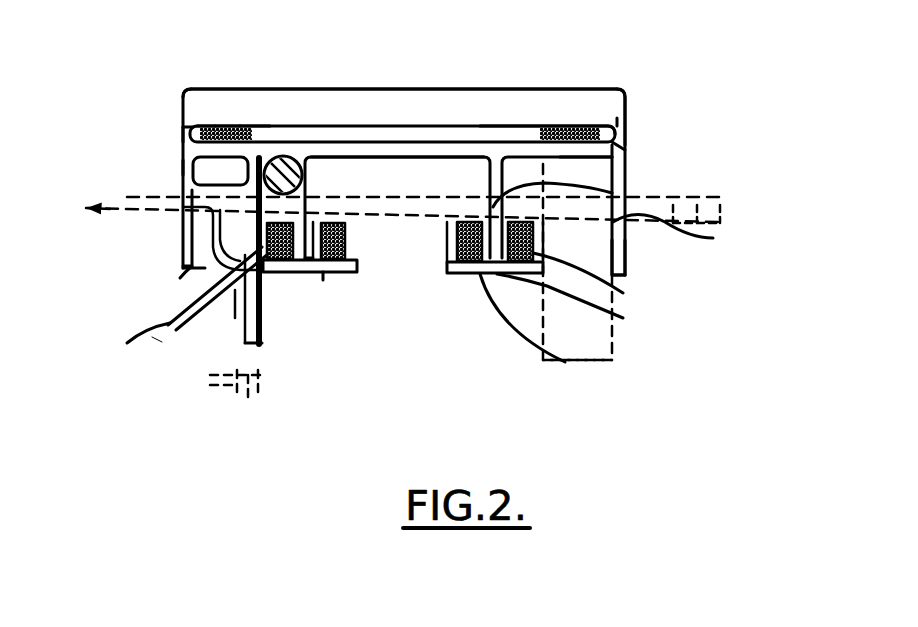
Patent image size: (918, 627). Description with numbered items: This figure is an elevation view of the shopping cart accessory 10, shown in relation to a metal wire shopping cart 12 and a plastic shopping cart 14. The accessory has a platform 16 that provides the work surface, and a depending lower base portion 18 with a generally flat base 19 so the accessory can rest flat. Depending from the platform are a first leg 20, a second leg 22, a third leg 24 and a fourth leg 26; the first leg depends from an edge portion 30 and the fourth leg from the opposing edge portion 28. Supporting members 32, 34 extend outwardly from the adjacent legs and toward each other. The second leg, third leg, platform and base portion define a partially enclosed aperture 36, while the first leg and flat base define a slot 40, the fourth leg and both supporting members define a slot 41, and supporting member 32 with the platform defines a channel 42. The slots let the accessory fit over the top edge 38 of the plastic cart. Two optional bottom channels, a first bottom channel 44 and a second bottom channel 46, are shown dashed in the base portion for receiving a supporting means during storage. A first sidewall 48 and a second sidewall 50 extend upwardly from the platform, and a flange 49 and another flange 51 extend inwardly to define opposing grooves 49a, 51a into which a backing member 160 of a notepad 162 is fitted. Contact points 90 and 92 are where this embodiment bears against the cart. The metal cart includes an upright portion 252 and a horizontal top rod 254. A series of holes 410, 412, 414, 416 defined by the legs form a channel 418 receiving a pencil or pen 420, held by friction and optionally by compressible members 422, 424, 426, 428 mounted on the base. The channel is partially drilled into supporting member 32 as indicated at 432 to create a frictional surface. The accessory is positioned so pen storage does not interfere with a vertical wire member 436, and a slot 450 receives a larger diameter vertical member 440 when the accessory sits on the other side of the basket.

The shopping cart accessory 10 is at (453, 122).
The metal wire shopping cart 12 is at (233, 330).
The plastic shopping cart 14 is at (213, 367).
The platform 16 is at (420, 124).
The base portion 18 is at (387, 347).
The flat base 19 is at (442, 268).
The first leg 20 is at (626, 169).
The second leg 22 is at (492, 180).
The third leg 24 is at (346, 240).
The fourth leg 26 is at (187, 268).
The opposing edge portion 28 is at (182, 127).
The edge portion 30 is at (632, 126).
The supporting member 32 is at (187, 157).
The supporting member 34 is at (337, 268).
The partially enclosed aperture 36 is at (420, 199).
The top edge 38 is at (597, 163).
The slot 40 is at (594, 252).
The slot 41 is at (128, 343).
The channel 42 is at (181, 124).
The first bottom channel 44 is at (623, 318).
The second bottom channel 46 is at (323, 275).
The first sidewall 48 is at (623, 137).
The flange 49 is at (617, 118).
The groove 49a is at (608, 138).
The second sidewall 50 is at (182, 125).
The flange 51 is at (201, 125).
The groove 51a is at (224, 125).
The contact point 90 is at (195, 318).
The contact point 92 is at (306, 187).
The backing member 160 is at (397, 124).
The notepad 162 is at (497, 88).
The upright portion 252 is at (262, 343).
The horizontal top rod 254 is at (300, 128).
The hole 410 is at (182, 168).
The hole 412 is at (268, 89).
The hole 414 is at (612, 193).
The hole 416 is at (713, 238).
The channel 418 is at (677, 195).
The pencil or pen 420 is at (720, 205).
The compressible member 422 is at (207, 280).
The compressible member 424 is at (355, 272).
The compressible member 426 is at (557, 358).
The compressible member 428 is at (623, 293).
The partially drilled channel portion 432 is at (185, 270).
The vertical wire member 436 is at (228, 387).
The larger diameter vertical member 440 is at (243, 392).
The slot 450 is at (278, 157).